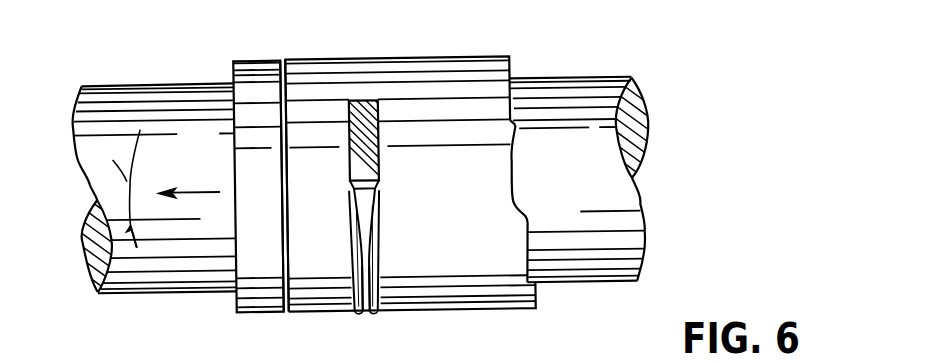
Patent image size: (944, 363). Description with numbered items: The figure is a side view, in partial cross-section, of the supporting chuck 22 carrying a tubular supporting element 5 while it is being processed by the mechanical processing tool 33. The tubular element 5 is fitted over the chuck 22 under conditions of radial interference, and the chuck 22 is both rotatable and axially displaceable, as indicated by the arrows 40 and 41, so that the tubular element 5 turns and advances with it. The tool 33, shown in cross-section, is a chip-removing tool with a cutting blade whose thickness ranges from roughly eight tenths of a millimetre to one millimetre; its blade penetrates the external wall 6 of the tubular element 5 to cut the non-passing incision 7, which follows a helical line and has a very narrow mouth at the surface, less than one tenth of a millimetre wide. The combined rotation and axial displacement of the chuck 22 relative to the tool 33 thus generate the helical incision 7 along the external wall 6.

The tubular supporting element 5 is at (444, 104).
The external wall 6 is at (387, 60).
The non-passing incision 7 is at (286, 224).
The supporting chuck 22 is at (161, 99).
The mechanical processing tool 33 is at (373, 153).
The arrow 40 is at (110, 189).
The arrow 41 is at (188, 189).